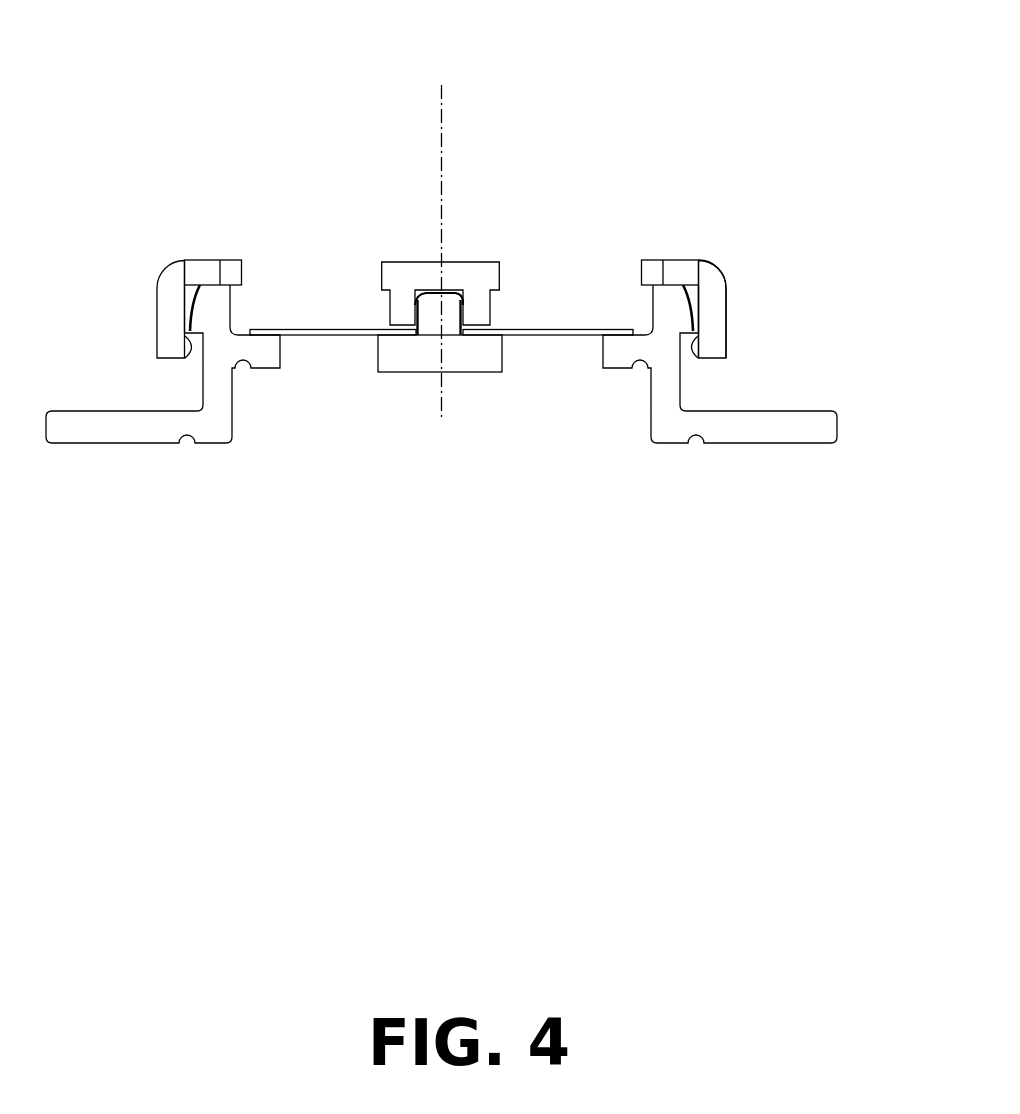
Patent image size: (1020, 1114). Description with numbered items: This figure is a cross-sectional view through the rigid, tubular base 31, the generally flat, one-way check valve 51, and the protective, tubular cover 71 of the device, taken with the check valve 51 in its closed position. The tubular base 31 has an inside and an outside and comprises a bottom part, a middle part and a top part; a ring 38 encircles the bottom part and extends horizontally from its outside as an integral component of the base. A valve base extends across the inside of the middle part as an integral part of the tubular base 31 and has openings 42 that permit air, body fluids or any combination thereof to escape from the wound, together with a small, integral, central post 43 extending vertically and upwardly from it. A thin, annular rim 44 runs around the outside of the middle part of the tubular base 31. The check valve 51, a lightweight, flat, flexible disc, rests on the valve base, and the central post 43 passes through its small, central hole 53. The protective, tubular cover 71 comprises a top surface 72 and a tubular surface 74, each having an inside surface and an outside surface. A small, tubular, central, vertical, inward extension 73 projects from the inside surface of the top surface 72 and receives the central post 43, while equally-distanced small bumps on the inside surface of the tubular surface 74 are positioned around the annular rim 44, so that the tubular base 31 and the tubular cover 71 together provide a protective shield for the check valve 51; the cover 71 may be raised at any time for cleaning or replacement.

The rigid, tubular base 31 is at (153, 381).
The ring 38 is at (96, 443).
The openings 42 is at (297, 352).
The small, integral, central post 43 is at (424, 328).
The thin, annular rim 44 is at (192, 331).
The generally flat, one-way check valve 51 is at (312, 337).
The small, central hole 53 is at (427, 311).
The protective, tubular cover 71 is at (134, 291).
The top surface 72 is at (176, 262).
The small, tubular, central, vertical, inward extension 73 is at (441, 235).
The tubular surface 74 is at (767, 227).